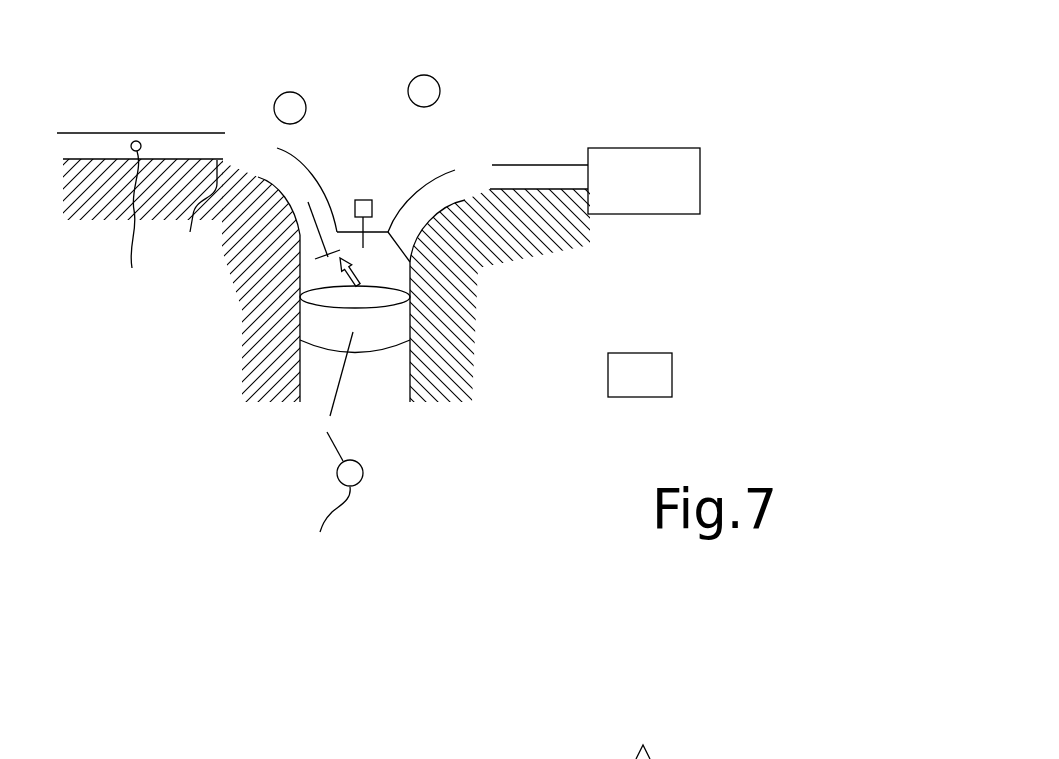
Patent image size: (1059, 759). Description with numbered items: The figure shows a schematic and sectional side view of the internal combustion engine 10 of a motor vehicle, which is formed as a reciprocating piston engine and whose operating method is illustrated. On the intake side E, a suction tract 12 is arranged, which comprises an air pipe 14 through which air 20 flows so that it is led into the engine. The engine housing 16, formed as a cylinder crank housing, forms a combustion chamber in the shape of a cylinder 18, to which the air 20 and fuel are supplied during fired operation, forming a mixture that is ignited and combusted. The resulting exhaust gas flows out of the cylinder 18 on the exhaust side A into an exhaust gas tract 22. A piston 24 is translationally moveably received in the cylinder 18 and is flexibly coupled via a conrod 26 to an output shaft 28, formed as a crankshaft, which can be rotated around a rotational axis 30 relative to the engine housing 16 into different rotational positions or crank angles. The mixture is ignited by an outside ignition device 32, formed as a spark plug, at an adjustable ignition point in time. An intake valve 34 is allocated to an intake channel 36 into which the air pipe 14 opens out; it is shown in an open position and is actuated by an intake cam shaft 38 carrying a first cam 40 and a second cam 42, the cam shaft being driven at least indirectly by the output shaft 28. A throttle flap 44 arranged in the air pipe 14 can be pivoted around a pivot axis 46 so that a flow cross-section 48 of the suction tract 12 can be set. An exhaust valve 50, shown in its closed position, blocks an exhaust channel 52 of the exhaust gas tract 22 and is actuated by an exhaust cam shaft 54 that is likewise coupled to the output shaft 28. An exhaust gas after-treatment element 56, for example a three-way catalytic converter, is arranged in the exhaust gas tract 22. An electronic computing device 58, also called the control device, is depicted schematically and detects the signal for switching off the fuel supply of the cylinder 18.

The internal combustion engine 10 is at (455, 110).
The suction tract 12 is at (102, 190).
The air pipe 14 is at (194, 215).
The engine housing 16 is at (462, 284).
The cylinder 18 is at (396, 266).
The air 20 is at (306, 172).
The exhaust gas tract 22 is at (572, 147).
The piston 24 is at (412, 357).
The conrod 26 is at (349, 362).
The output shaft 28 is at (366, 468).
The rotational axis 30 is at (327, 527).
The outside ignition device 32 is at (364, 200).
The intake valve 34 is at (321, 260).
The intake channel 36 is at (297, 198).
The intake cam shaft 38 is at (294, 91).
The first cam 40 is at (290, 141).
The second cam 42 is at (306, 122).
The throttle flap 44 is at (122, 137).
The pivot axis 46 is at (130, 227).
The flow cross-section 48 is at (160, 137).
The exhaust valve 50 is at (412, 223).
The exhaust channel 52 is at (465, 180).
The exhaust cam shaft 54 is at (431, 77).
The exhaust gas after-treatment element 56 is at (652, 215).
The electronic computing device 58 is at (672, 375).
The exhaust side A is at (562, 82).
The intake side E is at (194, 50).